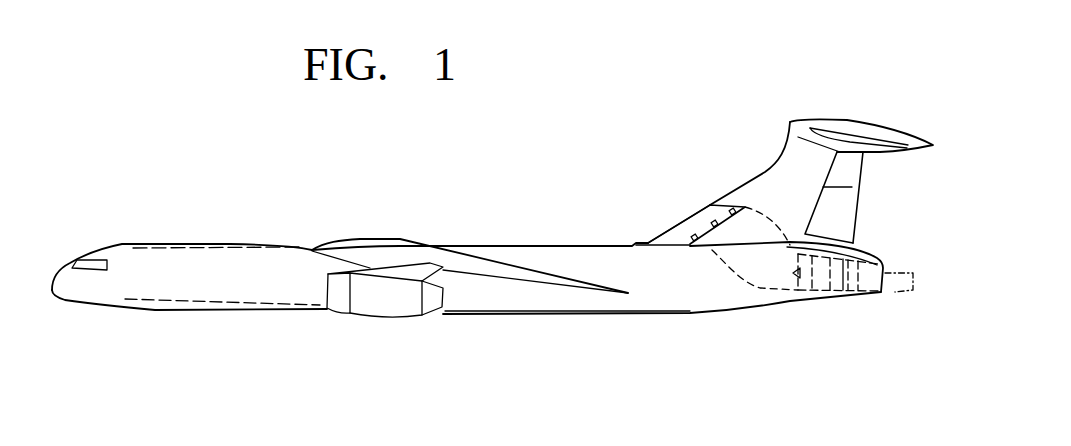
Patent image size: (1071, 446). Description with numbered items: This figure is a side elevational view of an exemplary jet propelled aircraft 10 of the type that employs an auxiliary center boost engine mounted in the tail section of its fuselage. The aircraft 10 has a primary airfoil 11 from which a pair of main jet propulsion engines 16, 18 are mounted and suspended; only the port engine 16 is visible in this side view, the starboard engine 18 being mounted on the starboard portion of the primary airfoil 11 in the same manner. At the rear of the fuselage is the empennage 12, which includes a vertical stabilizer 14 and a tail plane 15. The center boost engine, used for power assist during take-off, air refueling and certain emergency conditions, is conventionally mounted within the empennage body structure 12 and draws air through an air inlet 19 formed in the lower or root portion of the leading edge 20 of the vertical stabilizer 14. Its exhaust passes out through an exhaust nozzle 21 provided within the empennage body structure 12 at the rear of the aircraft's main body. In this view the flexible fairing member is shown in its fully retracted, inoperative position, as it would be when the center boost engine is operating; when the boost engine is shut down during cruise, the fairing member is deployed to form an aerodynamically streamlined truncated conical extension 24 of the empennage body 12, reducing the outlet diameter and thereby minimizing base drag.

The jet propelled aircraft 10 is at (331, 199).
The primary airfoil 11 is at (477, 268).
The empennage 12 is at (872, 220).
The vertical stabilizer 14 is at (783, 168).
The tail plane 15 is at (833, 132).
The main jet propulsion engine 16 is at (385, 314).
The main jet propulsion engine 18 is at (385, 309).
The air inlet 19 is at (653, 219).
The leading edge 20 is at (735, 188).
The exhaust nozzle 21 is at (893, 272).
The truncated conical extension 24 is at (895, 292).